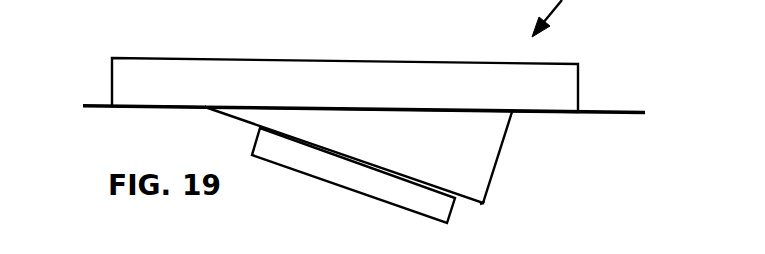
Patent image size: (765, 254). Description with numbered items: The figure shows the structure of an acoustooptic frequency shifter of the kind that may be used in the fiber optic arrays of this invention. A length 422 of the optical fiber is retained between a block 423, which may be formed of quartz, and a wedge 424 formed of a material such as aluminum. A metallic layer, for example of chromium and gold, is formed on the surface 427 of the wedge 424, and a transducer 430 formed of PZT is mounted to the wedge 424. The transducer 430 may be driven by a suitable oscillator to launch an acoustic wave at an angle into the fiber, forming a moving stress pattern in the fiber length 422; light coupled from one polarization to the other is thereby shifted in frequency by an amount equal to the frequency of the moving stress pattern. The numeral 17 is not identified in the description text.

The base member 17 is at (615, 115).
The length of the optical fiber 422 is at (125, 107).
The block 423 is at (580, 93).
The wedge 424 is at (495, 175).
The surface of the wedge 427 is at (478, 212).
The transducer 430 is at (283, 167).